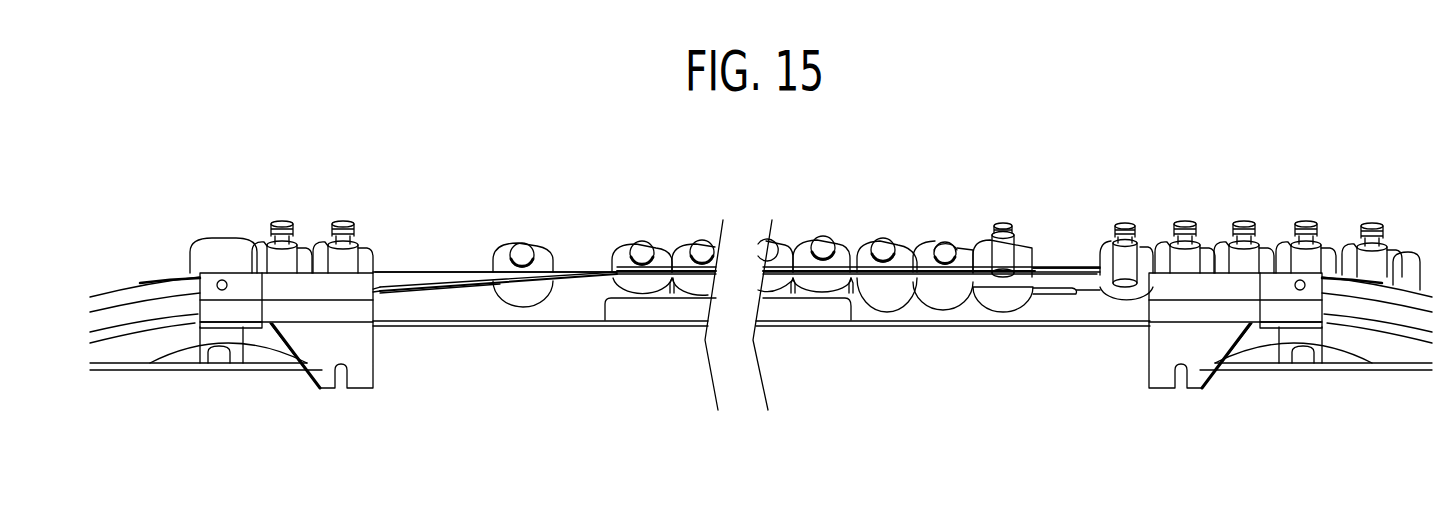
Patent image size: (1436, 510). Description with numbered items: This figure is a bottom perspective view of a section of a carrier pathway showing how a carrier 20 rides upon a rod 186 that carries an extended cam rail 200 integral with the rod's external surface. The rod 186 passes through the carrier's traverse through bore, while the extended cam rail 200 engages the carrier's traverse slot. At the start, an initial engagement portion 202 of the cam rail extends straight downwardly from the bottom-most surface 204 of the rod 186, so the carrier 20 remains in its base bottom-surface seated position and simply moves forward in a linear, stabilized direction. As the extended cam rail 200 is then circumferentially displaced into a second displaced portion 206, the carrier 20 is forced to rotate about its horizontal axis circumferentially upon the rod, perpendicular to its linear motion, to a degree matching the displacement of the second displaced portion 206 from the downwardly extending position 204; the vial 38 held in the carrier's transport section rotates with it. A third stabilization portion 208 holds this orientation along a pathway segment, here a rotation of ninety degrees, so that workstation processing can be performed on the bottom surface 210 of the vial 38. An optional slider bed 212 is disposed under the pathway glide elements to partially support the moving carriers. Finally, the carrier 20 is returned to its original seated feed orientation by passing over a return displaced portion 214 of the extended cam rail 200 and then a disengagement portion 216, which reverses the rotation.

The carrier 20 is at (373, 258).
The vial 38 is at (347, 253).
The rod 186 is at (447, 277).
The extended cam rail 200 is at (450, 290).
The initial engagement portion 202 is at (403, 293).
The bottom-most surface 204 is at (382, 290).
The second displaced portion 206 is at (573, 277).
The third stabilization portion 208 is at (710, 263).
The bottom surface 210 is at (518, 258).
The slider bed 212 is at (650, 310).
The return displaced portion 214 is at (1002, 290).
The disengagement portion 216 is at (1075, 297).